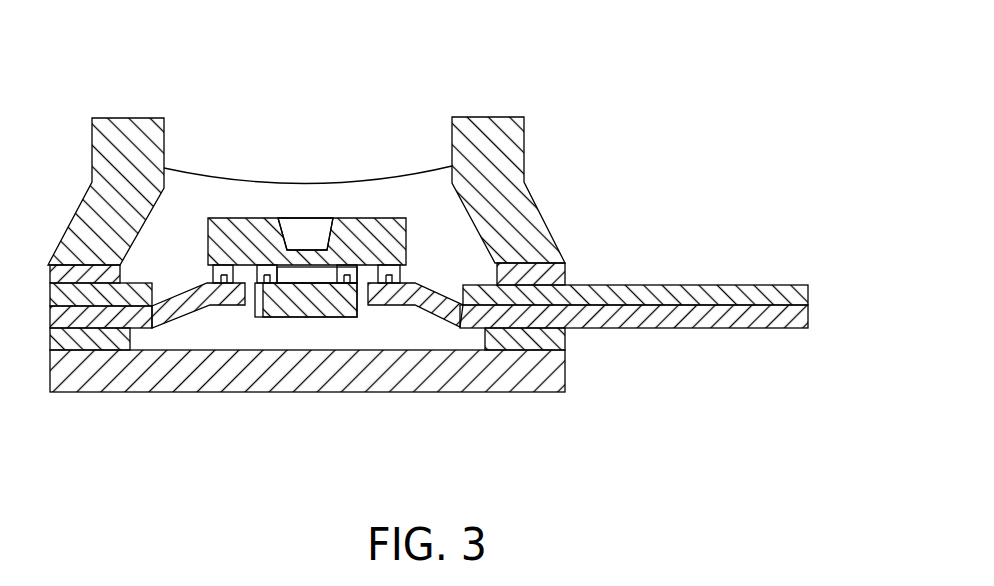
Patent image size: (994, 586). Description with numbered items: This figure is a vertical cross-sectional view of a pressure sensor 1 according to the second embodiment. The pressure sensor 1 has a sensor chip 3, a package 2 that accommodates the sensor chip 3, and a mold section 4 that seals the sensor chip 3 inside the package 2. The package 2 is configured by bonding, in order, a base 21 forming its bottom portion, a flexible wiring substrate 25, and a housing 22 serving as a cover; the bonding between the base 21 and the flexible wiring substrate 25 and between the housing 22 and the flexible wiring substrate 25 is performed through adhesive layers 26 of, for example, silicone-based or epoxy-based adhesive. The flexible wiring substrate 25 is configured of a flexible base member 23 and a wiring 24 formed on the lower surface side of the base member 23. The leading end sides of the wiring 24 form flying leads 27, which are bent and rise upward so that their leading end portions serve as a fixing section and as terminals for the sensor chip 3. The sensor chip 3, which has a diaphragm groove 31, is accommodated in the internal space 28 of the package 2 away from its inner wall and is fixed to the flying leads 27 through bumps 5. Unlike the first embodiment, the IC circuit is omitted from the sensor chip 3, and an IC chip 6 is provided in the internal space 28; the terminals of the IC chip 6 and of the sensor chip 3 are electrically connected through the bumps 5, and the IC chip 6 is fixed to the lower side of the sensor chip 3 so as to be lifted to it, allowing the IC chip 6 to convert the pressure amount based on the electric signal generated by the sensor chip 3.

The pressure sensor 1 is at (528, 70).
The package 2 is at (565, 192).
The sensor chip 3 is at (363, 230).
The mold section 4 is at (192, 198).
The bumps 5 is at (225, 283).
The IC chip 6 is at (315, 307).
The base 21 is at (443, 372).
The housing 22 is at (165, 135).
The base member 23 is at (682, 293).
The wiring 24 is at (653, 320).
The flexible wiring substrate 25 is at (634, 359).
The adhesive layers 26 is at (88, 278).
The flying leads 27 is at (187, 308).
The internal space 28 is at (460, 338).
The diaphragm groove 31 is at (303, 237).